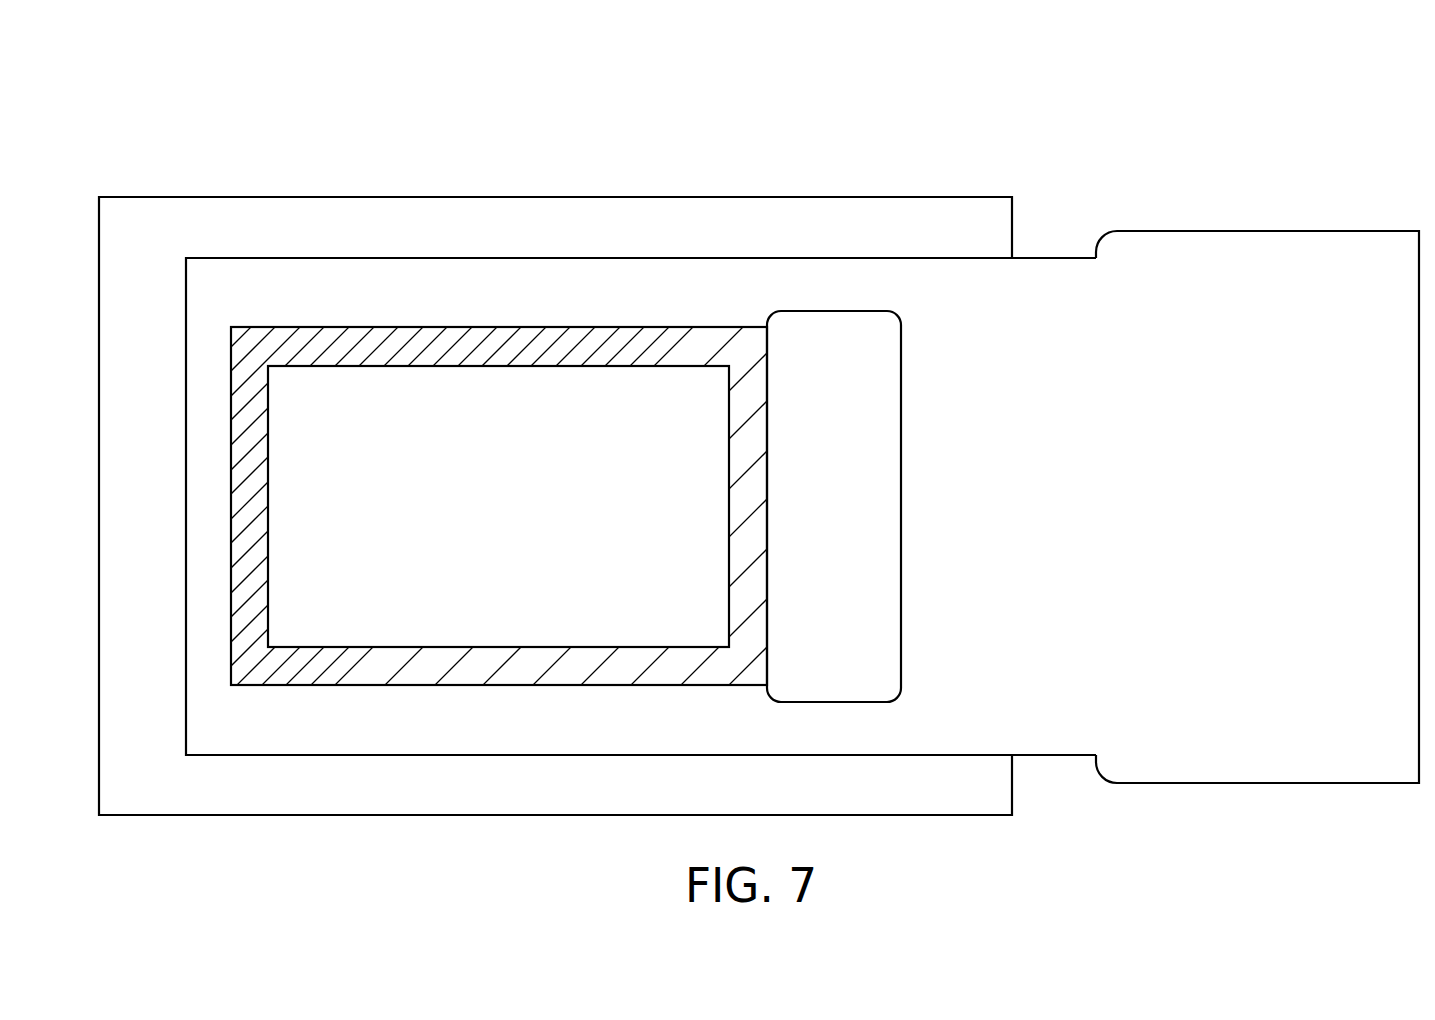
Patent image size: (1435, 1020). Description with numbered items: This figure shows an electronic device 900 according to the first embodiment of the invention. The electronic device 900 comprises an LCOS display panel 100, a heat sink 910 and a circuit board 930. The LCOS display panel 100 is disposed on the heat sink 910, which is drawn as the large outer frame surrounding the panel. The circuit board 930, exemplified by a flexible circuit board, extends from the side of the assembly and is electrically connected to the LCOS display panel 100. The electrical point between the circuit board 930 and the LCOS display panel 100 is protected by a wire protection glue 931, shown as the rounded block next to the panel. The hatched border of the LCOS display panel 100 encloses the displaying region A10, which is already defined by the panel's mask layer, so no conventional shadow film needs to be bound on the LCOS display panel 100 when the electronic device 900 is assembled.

The electronic device 900 is at (1393, 61).
The heat sink 910 is at (129, 222).
The circuit board 930 is at (1236, 265).
The wire protection glue 931 is at (814, 352).
The LCOS display panel 100 is at (510, 352).
The displaying region A10 is at (363, 408).